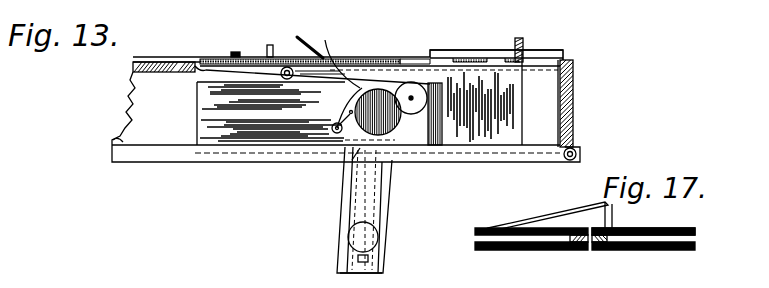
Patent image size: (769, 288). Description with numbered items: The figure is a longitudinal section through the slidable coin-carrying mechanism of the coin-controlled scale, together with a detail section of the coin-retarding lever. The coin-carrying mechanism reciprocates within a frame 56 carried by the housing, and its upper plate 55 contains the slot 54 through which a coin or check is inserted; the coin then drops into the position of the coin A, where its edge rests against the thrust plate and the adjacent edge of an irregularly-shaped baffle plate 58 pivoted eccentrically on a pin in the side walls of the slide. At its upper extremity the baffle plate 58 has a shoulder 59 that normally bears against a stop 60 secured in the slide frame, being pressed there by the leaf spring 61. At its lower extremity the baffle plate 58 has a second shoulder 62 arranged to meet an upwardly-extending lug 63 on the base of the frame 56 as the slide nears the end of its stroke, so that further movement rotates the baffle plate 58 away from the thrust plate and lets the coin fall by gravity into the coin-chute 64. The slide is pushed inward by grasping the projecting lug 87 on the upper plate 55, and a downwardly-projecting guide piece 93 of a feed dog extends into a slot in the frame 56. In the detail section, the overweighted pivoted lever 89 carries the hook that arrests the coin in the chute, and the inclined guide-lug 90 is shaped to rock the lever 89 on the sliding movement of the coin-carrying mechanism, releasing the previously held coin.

In FIG. 13, the slot 54 is at (417, 60).
In FIG. 13, the upper plate 55 is at (477, 73).
In FIG. 13, the frame 56 is at (573, 110).
In FIG. 17, the frame 56 is at (640, 248).
In FIG. 13, the baffle plate 58 is at (360, 140).
In FIG. 13, the shoulder 59 is at (378, 88).
In FIG. 13, the stop 60 is at (396, 84).
In FIG. 13, the leaf spring 61 is at (329, 80).
In FIG. 13, the shoulder 62 is at (393, 172).
In FIG. 13, the lug 63 is at (352, 160).
In FIG. 13, the coin-chute 64 is at (337, 255).
In FIG. 13, the projecting lug 87 is at (525, 40).
In FIG. 13, the guide piece 93 is at (372, 285).
In FIG. 13, the coin A is at (415, 106).
In FIG. 17, the lever 89 is at (618, 211).
In FIG. 17, the inclined guide-lug 90 is at (600, 202).